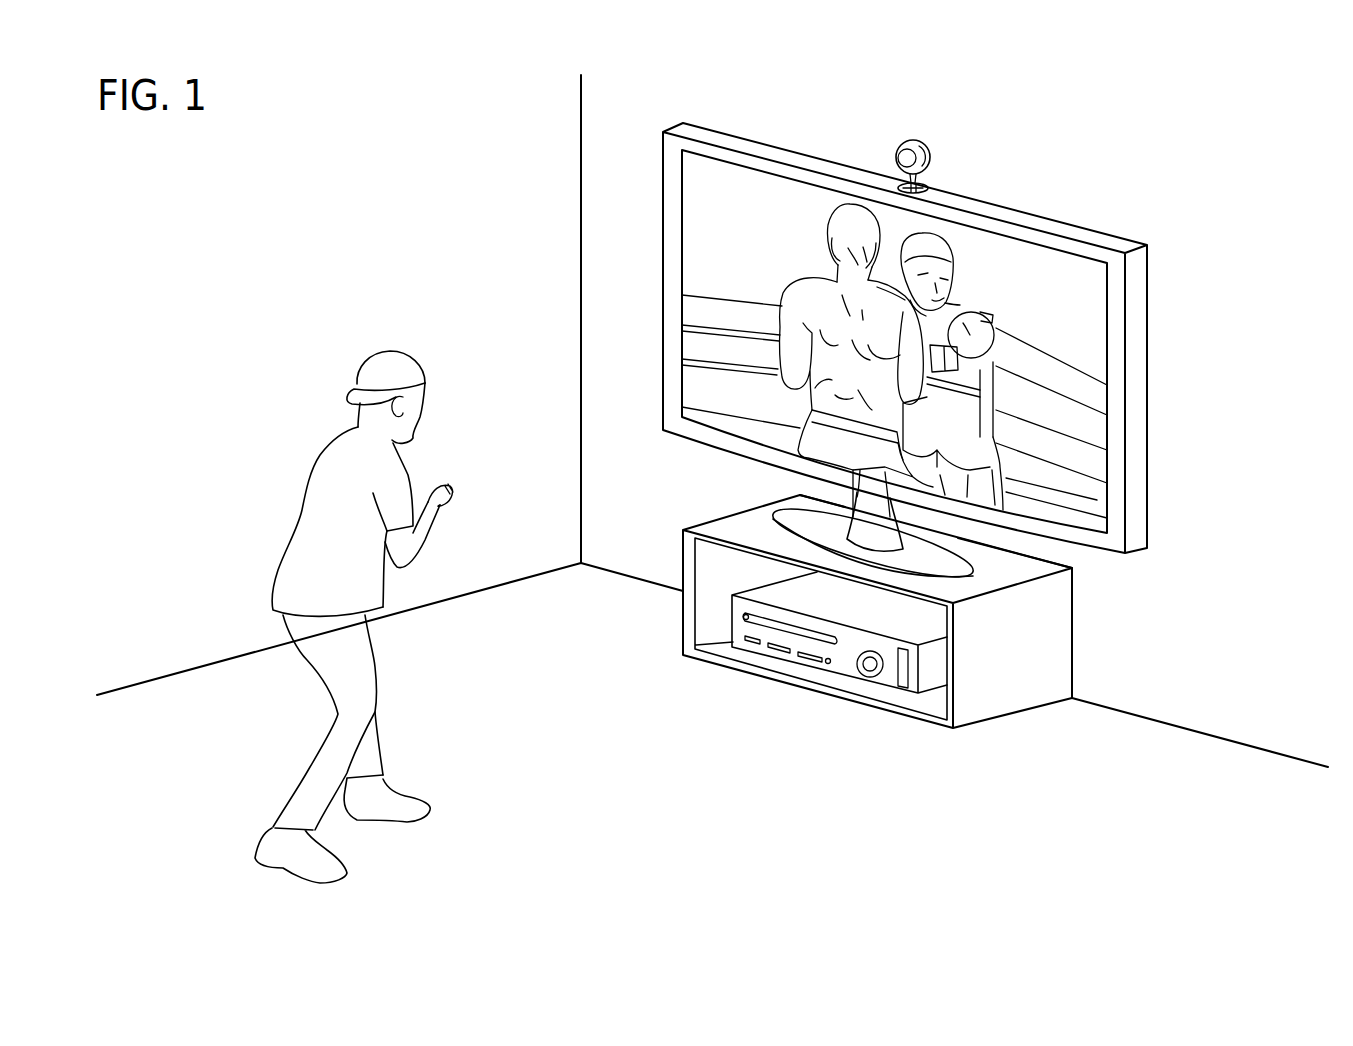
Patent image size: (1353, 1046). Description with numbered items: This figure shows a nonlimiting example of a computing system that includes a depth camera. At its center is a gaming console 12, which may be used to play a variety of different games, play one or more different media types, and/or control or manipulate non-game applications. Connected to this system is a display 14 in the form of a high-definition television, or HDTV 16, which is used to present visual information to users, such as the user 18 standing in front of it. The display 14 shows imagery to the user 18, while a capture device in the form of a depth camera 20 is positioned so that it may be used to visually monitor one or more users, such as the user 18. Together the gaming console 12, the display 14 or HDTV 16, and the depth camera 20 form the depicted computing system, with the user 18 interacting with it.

The gaming console 12 is at (843, 673).
The display 14 is at (1108, 468).
The HDTV 16 is at (1148, 337).
The user 18 is at (378, 727).
The depth camera 20 is at (931, 154).